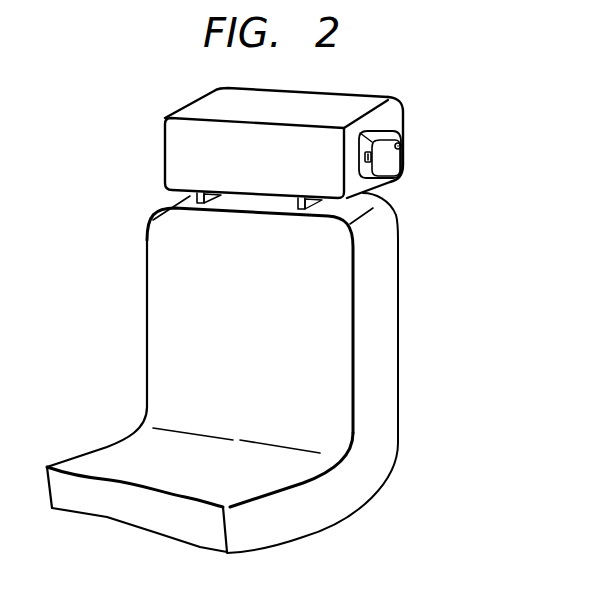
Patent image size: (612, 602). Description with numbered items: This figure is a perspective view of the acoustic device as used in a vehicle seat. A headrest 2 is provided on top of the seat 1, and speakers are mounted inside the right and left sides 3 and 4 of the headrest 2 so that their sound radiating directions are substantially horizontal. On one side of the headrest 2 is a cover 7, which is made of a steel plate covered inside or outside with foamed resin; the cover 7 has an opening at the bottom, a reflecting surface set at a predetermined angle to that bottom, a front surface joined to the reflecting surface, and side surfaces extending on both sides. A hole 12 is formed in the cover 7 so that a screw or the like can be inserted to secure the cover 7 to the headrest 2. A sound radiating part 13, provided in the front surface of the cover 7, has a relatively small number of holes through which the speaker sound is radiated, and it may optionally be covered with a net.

The seat 1 is at (395, 348).
The headrest 2 is at (200, 105).
The right side of headrest 3 is at (401, 115).
The left side of headrest 4 is at (163, 143).
The cover 7 is at (398, 160).
The hole 12 is at (402, 146).
The sound radiating part 13 is at (371, 157).